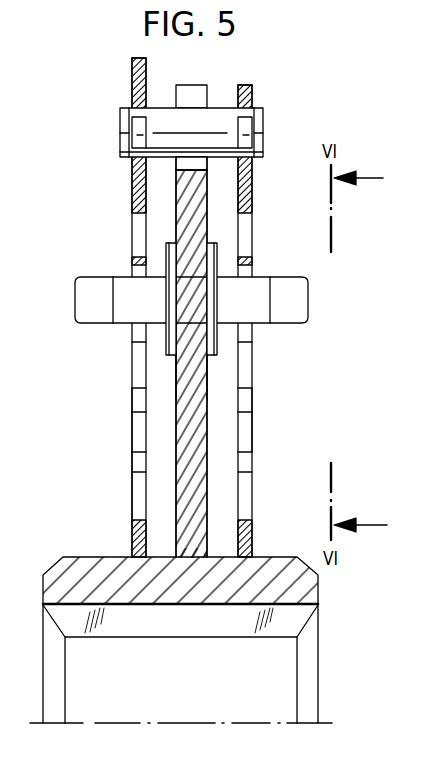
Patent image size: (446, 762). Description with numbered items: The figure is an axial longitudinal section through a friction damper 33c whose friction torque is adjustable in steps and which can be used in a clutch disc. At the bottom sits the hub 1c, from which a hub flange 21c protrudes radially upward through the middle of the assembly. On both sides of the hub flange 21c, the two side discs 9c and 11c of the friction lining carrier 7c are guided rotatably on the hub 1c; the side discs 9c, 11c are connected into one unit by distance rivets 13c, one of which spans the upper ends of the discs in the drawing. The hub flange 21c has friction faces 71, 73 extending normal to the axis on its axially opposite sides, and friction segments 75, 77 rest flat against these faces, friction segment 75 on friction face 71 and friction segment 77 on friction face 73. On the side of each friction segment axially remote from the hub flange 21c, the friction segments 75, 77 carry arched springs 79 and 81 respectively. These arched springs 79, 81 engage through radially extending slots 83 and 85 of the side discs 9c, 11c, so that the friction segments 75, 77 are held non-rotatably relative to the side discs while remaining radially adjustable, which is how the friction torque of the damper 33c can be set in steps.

The friction lining carrier 7c is at (107, 92).
The distance rivets 13c is at (165, 120).
The side disc 9c is at (247, 176).
The side disc 11c is at (132, 176).
The hub flange 21c is at (183, 213).
The friction segment 77 is at (165, 257).
The friction segment 75 is at (217, 250).
The arched spring 81 is at (83, 310).
The arched spring 79 is at (298, 310).
The friction face 73 is at (175, 382).
The friction face 71 is at (208, 372).
The radially extending slot 85 is at (140, 428).
The radially extending slot 83 is at (245, 428).
The friction damper 33c is at (124, 474).
The hub 1c is at (70, 563).